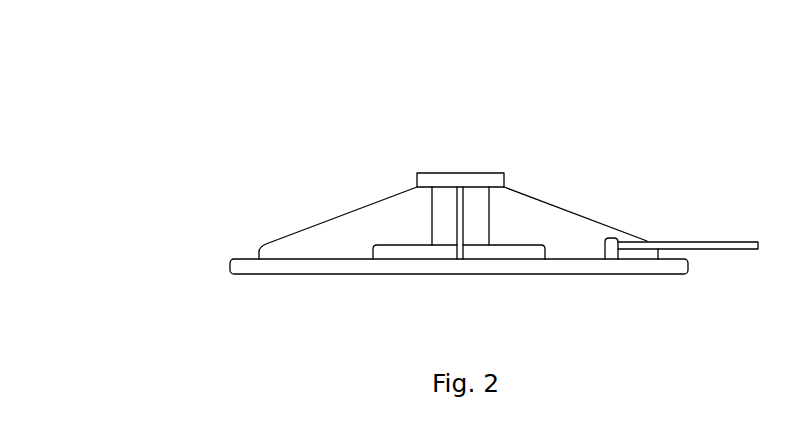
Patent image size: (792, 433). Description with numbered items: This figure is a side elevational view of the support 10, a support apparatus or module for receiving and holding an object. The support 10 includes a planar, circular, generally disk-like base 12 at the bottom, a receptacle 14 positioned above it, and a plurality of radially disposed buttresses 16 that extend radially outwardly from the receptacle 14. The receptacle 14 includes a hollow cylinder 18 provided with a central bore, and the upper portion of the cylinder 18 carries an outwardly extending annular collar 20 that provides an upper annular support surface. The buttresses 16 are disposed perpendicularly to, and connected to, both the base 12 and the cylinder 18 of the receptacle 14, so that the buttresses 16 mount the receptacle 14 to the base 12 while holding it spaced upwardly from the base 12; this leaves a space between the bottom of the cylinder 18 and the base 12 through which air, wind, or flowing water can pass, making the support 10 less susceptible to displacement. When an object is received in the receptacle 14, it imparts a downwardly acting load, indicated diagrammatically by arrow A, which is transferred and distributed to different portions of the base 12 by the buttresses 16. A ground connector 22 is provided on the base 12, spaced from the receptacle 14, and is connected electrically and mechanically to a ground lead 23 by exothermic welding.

The support 10 is at (330, 140).
The base 12 is at (462, 278).
The receptacle 14 is at (395, 179).
The buttresses 16 is at (345, 213).
The hollow cylinder 18 is at (443, 217).
The annular collar 20 is at (526, 179).
The ground connector 22 is at (614, 237).
The ground lead 23 is at (690, 241).
The arrow A is at (462, 172).